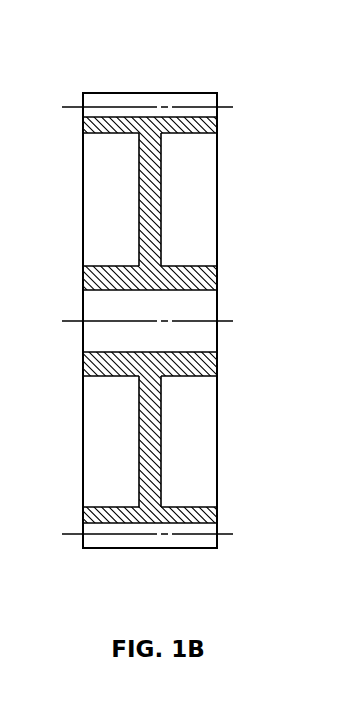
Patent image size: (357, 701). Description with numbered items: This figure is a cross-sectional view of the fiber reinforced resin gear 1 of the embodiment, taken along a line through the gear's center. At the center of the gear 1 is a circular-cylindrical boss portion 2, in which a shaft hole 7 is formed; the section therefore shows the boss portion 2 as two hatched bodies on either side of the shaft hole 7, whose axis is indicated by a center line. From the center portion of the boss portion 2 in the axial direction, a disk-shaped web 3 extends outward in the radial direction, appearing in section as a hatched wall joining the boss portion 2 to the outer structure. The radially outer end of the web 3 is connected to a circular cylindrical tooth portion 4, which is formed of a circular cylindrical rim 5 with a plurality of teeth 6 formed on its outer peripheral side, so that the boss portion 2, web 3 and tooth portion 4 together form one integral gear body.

The fiber reinforced resin gear 1 is at (228, 139).
The boss portion 2 is at (90, 265).
The web 3 is at (162, 239).
The tooth portion 4 is at (103, 133).
The rim 5 is at (82, 131).
The teeth 6 is at (125, 93).
The shaft hole 7 is at (107, 352).